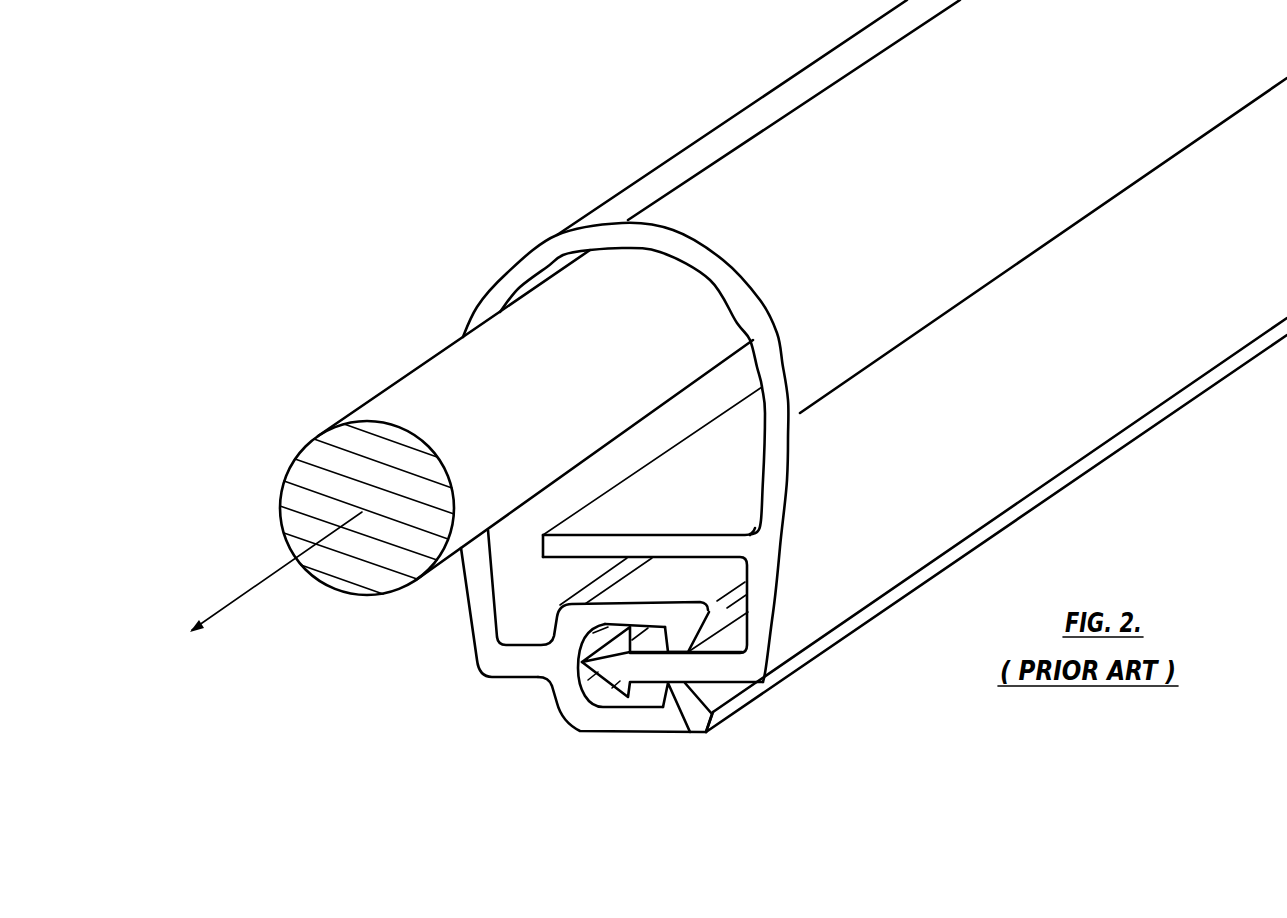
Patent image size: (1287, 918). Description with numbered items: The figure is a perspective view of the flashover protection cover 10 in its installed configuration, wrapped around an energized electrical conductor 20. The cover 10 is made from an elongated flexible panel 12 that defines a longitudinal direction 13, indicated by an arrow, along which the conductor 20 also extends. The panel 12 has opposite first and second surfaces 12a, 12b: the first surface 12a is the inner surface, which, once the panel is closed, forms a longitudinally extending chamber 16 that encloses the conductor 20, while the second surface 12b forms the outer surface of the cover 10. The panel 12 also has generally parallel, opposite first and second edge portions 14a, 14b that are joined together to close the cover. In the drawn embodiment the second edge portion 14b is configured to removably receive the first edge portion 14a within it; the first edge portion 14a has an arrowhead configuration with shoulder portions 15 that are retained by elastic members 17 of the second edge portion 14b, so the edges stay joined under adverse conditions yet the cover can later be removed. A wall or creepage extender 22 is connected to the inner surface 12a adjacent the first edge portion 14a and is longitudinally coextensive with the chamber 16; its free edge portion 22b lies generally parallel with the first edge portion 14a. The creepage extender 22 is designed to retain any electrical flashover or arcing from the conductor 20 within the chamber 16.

The flashover protection cover 10 is at (791, 60).
The elongated flexible panel 12 is at (690, 150).
The first surface 12a is at (544, 280).
The second surface 12b is at (827, 227).
The longitudinal direction 13 is at (234, 600).
The first edge portion 14a is at (668, 685).
The second edge portion 14b is at (567, 723).
The shoulder portions 15 is at (652, 630).
The longitudinally extending chamber 16 is at (557, 495).
The elastic members 17 is at (682, 612).
The electrical conductor 20 is at (407, 395).
The creepage extender 22 is at (717, 502).
The free edge portion 22b is at (475, 540).